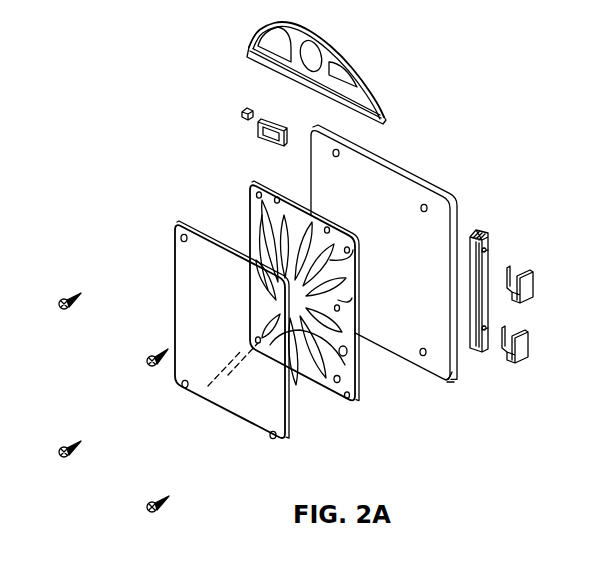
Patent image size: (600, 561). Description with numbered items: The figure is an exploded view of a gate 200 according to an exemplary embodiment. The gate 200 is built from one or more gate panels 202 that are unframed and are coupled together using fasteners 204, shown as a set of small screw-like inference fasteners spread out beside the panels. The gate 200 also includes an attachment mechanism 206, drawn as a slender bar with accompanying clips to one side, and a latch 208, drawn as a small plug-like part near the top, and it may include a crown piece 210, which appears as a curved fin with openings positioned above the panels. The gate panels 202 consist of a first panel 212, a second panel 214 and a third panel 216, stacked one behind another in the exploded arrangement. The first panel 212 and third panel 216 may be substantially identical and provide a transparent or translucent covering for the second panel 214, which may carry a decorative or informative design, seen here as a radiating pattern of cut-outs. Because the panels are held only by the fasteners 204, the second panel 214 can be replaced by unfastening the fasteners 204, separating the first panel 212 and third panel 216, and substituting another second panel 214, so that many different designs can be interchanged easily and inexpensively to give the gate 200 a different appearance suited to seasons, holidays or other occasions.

The gate 200 is at (503, 124).
The gate panels 202 is at (466, 208).
The fasteners 204 is at (68, 297).
The attachment mechanism 206 is at (487, 243).
The latch 208 is at (266, 130).
The crown piece 210 is at (356, 72).
The first panel 212 is at (285, 432).
The second panel 214 is at (360, 385).
The third panel 216 is at (450, 372).